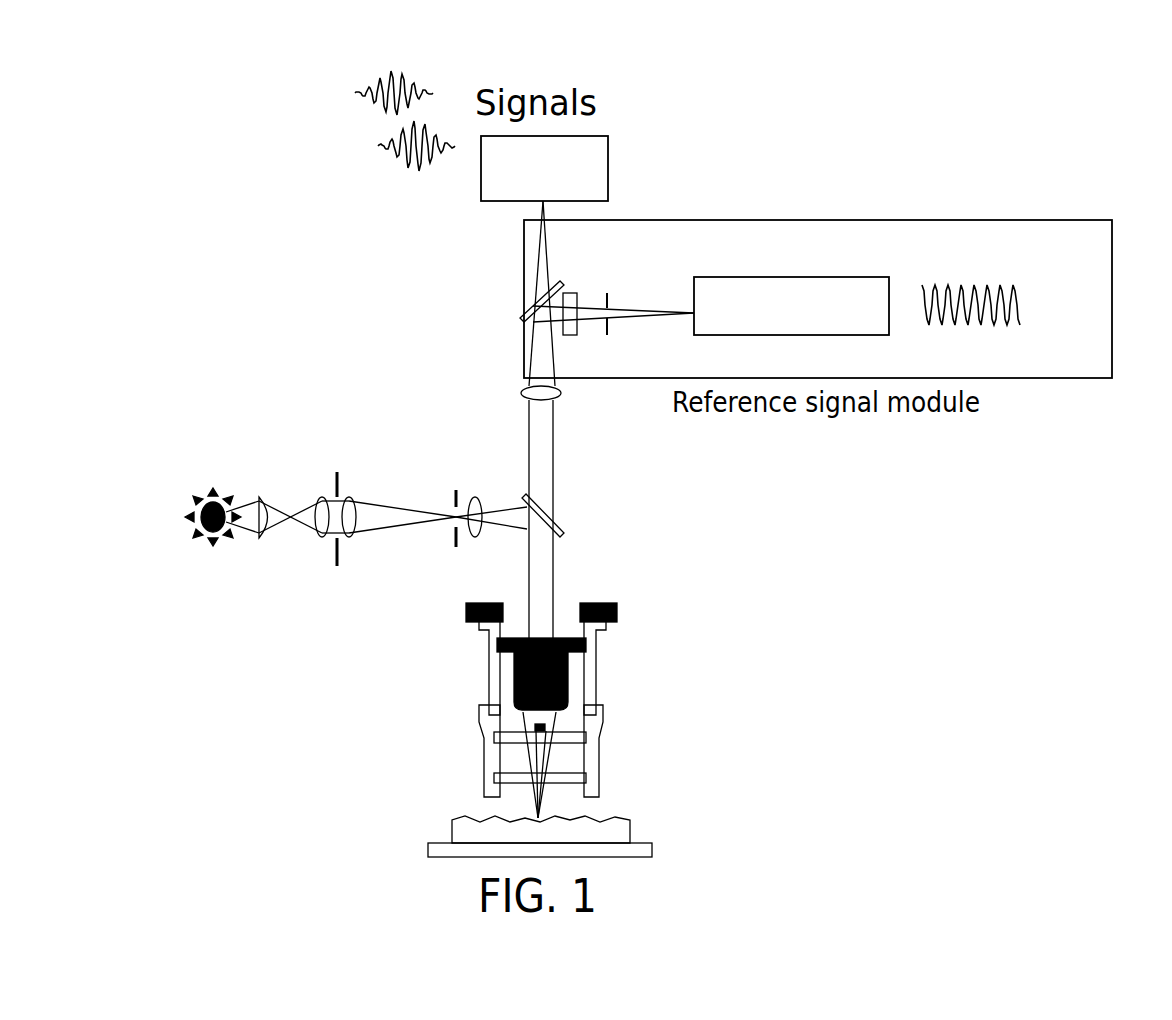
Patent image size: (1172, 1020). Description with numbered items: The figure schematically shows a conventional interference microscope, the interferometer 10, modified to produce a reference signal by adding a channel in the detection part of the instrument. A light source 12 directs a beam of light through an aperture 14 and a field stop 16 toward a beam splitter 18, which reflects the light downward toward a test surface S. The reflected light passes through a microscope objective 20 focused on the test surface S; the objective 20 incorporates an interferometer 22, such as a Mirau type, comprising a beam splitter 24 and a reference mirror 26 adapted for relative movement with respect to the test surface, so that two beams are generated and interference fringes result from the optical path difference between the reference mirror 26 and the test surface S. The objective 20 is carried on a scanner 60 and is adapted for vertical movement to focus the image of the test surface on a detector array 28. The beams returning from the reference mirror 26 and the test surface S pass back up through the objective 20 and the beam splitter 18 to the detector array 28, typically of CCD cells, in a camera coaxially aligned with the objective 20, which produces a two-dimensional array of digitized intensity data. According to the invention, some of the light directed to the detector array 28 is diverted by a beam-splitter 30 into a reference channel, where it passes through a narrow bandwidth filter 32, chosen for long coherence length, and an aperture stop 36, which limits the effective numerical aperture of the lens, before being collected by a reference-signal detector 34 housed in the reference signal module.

The interferometer 10 is at (787, 183).
The light source 12 is at (217, 490).
The aperture 14 is at (338, 472).
The field stop 16 is at (458, 490).
The beam splitter 18 is at (566, 532).
The microscope objective 20 is at (566, 686).
The interferometer 22 is at (600, 757).
The beam splitter 24 is at (508, 772).
The reference mirror 26 is at (600, 729).
The detector array 28 is at (608, 158).
The beam-splitter 30 is at (524, 317).
The narrow bandwidth filter 32 is at (573, 293).
The reference-signal detector 34 is at (839, 277).
The aperture stop 36 is at (609, 300).
The scanner 60 is at (606, 630).
The test surface S is at (612, 819).